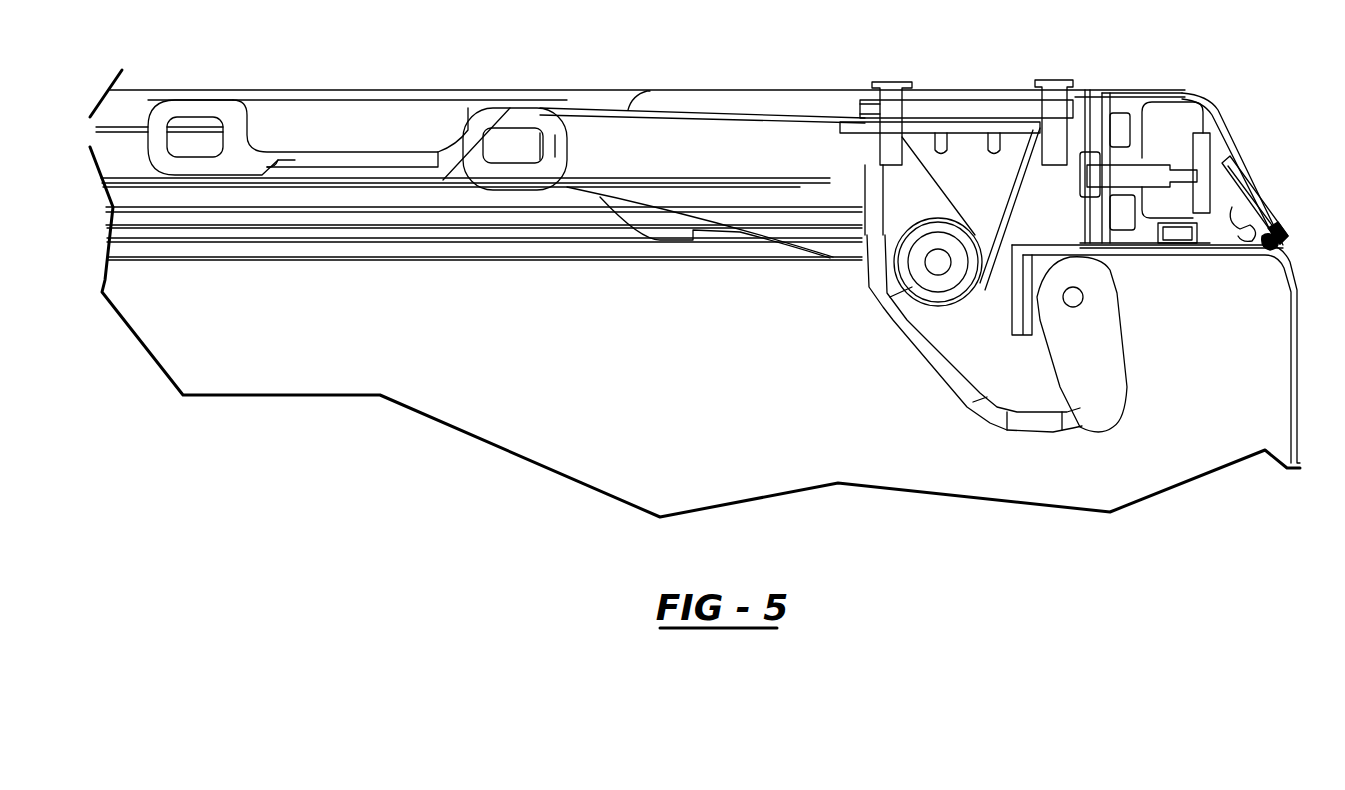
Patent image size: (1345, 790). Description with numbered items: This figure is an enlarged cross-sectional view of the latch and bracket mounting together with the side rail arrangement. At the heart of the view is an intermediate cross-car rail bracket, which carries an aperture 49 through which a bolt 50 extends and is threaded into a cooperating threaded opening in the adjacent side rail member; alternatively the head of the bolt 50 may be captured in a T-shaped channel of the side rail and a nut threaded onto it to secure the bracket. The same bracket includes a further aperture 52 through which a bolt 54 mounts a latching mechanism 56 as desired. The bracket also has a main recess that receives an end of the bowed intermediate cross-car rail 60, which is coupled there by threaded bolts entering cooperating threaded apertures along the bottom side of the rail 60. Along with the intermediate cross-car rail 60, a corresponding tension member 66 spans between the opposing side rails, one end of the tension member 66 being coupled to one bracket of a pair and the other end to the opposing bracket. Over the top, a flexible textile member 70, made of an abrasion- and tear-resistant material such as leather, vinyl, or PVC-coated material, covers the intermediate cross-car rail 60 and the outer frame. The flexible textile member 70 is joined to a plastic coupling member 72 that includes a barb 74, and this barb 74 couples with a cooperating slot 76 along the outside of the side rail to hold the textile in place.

The aperture 49 is at (1107, 167).
The bolt 50 is at (1137, 173).
The aperture 52 is at (907, 123).
The bolt 54 is at (892, 88).
The latching mechanism 56 is at (600, 107).
The intermediate cross-car rail 60 is at (133, 95).
The tension member 66 is at (642, 262).
The flexible textile member 70 is at (1182, 86).
The plastic coupling member 72 is at (1237, 170).
The barb 74 is at (1232, 240).
The slot 76 is at (1260, 245).